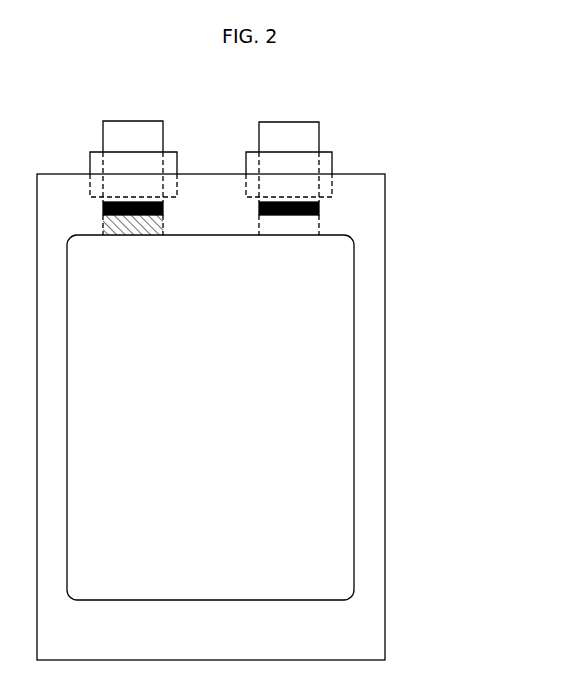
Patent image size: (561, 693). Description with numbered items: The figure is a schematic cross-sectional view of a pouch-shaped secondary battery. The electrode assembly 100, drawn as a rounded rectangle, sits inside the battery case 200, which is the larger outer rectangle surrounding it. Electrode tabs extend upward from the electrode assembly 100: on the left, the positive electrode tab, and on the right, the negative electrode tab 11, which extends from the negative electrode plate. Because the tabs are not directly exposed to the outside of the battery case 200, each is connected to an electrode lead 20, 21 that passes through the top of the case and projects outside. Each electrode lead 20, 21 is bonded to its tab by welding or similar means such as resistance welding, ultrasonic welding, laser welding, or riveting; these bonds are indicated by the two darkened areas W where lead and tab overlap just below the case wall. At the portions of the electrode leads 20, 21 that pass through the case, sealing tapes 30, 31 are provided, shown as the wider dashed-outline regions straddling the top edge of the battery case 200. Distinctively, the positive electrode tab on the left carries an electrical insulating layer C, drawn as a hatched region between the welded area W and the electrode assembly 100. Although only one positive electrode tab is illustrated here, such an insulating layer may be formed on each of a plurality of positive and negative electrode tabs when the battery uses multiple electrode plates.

The electrode assembly 100 is at (347, 375).
The battery case 200 is at (398, 259).
The electrode lead 20 is at (137, 128).
The electrode lead 21 is at (293, 130).
The sealing tape 30 is at (177, 158).
The sealing tape 31 is at (333, 158).
The welded area W is at (259, 213).
The electrical insulating layer C is at (135, 233).
The negative electrode tab 11 is at (292, 233).